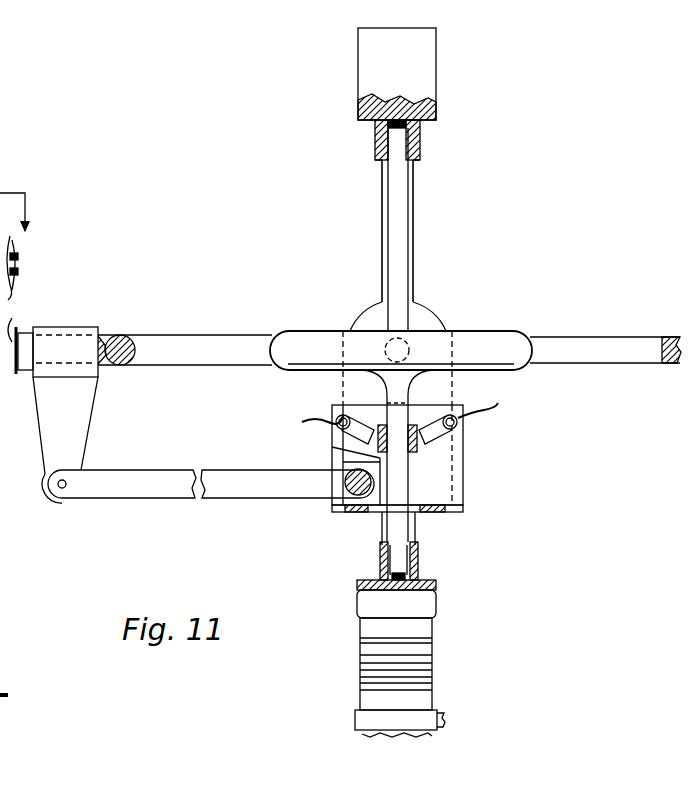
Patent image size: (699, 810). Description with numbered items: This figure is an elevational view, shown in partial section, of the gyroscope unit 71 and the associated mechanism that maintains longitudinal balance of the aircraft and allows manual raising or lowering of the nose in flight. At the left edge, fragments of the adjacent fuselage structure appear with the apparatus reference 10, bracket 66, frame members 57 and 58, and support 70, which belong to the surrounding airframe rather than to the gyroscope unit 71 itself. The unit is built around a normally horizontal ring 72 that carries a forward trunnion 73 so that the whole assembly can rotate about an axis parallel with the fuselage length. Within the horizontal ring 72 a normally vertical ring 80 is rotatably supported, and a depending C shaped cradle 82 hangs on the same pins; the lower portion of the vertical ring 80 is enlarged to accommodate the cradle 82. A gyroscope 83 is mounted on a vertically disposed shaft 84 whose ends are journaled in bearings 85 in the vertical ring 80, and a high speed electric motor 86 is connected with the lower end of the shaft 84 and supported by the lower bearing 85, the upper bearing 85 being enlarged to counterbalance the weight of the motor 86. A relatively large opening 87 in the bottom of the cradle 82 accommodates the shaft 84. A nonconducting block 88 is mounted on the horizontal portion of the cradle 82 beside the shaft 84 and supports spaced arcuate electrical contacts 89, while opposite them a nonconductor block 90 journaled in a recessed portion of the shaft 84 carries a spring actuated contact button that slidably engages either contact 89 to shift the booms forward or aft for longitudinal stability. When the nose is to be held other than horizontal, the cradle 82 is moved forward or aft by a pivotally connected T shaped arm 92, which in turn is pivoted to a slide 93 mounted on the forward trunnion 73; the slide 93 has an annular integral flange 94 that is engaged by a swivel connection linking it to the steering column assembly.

The glass handling apparatus 10 is at (20, 198).
The bracket 66 is at (10, 253).
The frame member 57 is at (15, 562).
The support 70 is at (10, 631).
The frame member 58 is at (10, 712).
The gyroscope unit 71 is at (350, 305).
The horizontal ring 72 is at (150, 340).
The forward trunnion 73 is at (14, 326).
The vertical ring 80 is at (415, 192).
The C shaped cradle 82 is at (440, 388).
The gyroscope 83 is at (505, 342).
The vertical shaft 84 is at (386, 202).
The shaft bearing 85 is at (424, 46).
The electric motor 86 is at (424, 578).
The opening 87 is at (420, 515).
The nonconducting block 88 is at (463, 472).
The arcuate electrical contacts 89 is at (342, 440).
The nonconductor block 90 is at (413, 450).
The T shaped arm 92 is at (140, 470).
The slide 93 is at (78, 412).
The annular flange 94 is at (24, 330).